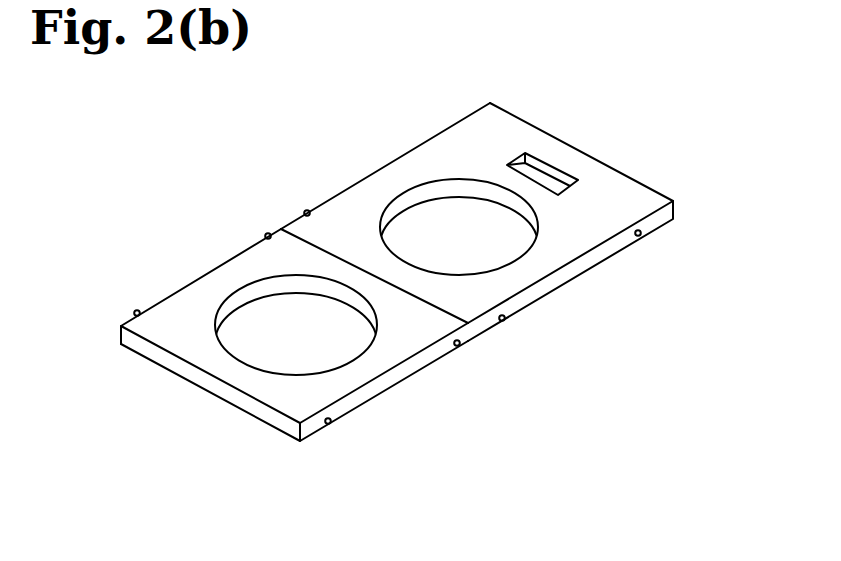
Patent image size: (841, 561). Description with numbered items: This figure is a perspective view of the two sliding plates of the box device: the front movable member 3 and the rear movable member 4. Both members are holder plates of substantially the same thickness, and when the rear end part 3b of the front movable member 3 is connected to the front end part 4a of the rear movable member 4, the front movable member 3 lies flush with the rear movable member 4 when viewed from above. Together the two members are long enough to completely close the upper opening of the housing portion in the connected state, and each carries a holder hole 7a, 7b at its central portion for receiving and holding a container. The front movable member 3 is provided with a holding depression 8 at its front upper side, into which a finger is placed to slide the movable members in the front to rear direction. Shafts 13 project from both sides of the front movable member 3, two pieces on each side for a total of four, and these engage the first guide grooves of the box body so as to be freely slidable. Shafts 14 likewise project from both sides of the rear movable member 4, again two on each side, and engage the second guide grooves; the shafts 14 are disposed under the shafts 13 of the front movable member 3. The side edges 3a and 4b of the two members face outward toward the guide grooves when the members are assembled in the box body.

The front movable member 3 is at (357, 178).
The side edge of plate portion 3 3a is at (645, 196).
The rear end part of the front movable member 3b is at (483, 325).
The rear movable member 4 is at (190, 276).
The front end part of the rear movable member 4a is at (283, 243).
The front side face of plate portion 4 4b is at (311, 428).
The holder hole 7a is at (420, 195).
The holder hole 7b is at (247, 297).
The holding depression 8 is at (546, 161).
The shafts 13 is at (440, 132).
The shafts 14 is at (135, 311).